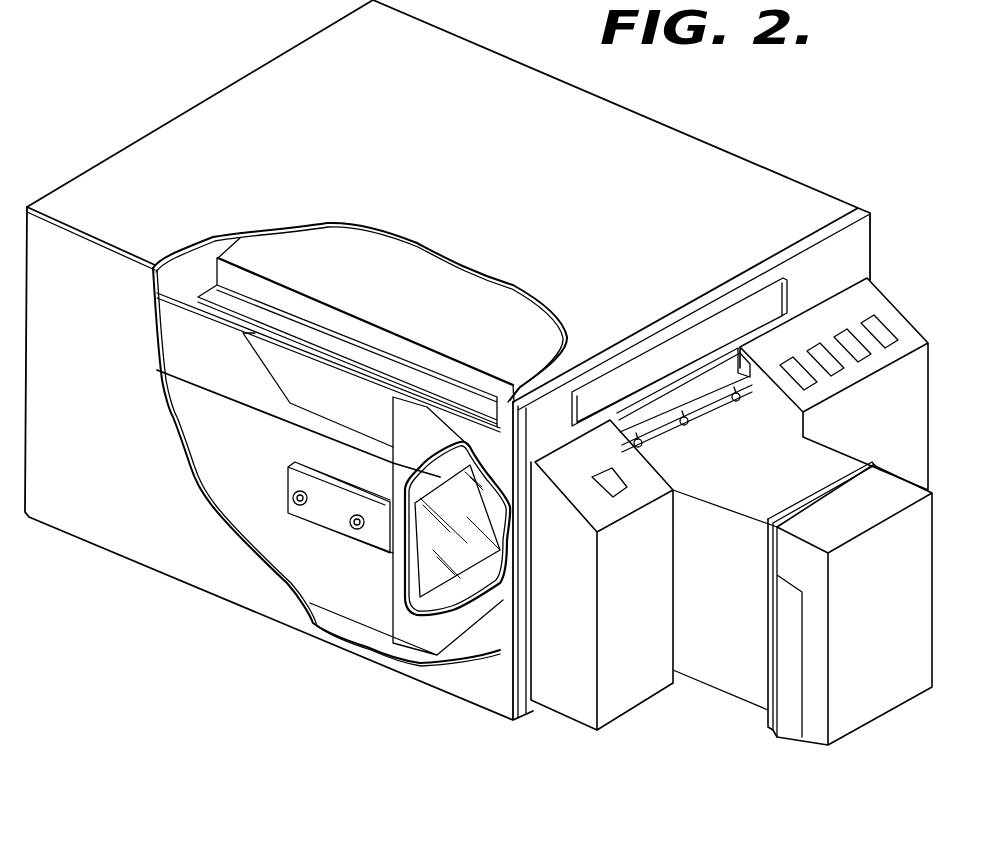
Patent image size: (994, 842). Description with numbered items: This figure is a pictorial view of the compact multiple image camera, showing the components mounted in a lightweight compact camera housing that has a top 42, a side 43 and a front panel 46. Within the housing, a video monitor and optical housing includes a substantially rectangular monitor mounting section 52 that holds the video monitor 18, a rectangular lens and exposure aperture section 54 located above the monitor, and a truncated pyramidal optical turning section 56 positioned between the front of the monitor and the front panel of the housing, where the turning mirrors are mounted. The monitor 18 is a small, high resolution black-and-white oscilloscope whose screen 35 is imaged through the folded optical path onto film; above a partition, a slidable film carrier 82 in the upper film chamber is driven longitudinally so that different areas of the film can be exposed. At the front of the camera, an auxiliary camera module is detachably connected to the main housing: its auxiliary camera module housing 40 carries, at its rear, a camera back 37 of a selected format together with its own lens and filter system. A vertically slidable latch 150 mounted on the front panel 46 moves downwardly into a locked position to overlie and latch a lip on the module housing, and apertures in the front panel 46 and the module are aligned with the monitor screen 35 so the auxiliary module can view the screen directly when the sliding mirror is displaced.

The video monitor 18 is at (432, 565).
The screen 35 is at (427, 538).
The camera back 37 is at (850, 730).
The auxiliary camera module housing 40 is at (728, 695).
The top 42 is at (648, 128).
The side 43 is at (135, 551).
The front panel 46 is at (863, 253).
The monitor mounting section 52 is at (282, 557).
The lens and exposure aperture section 54 is at (268, 356).
The optical turning section 56 is at (453, 420).
The film carrier 82 is at (292, 242).
The latch 150 is at (700, 405).